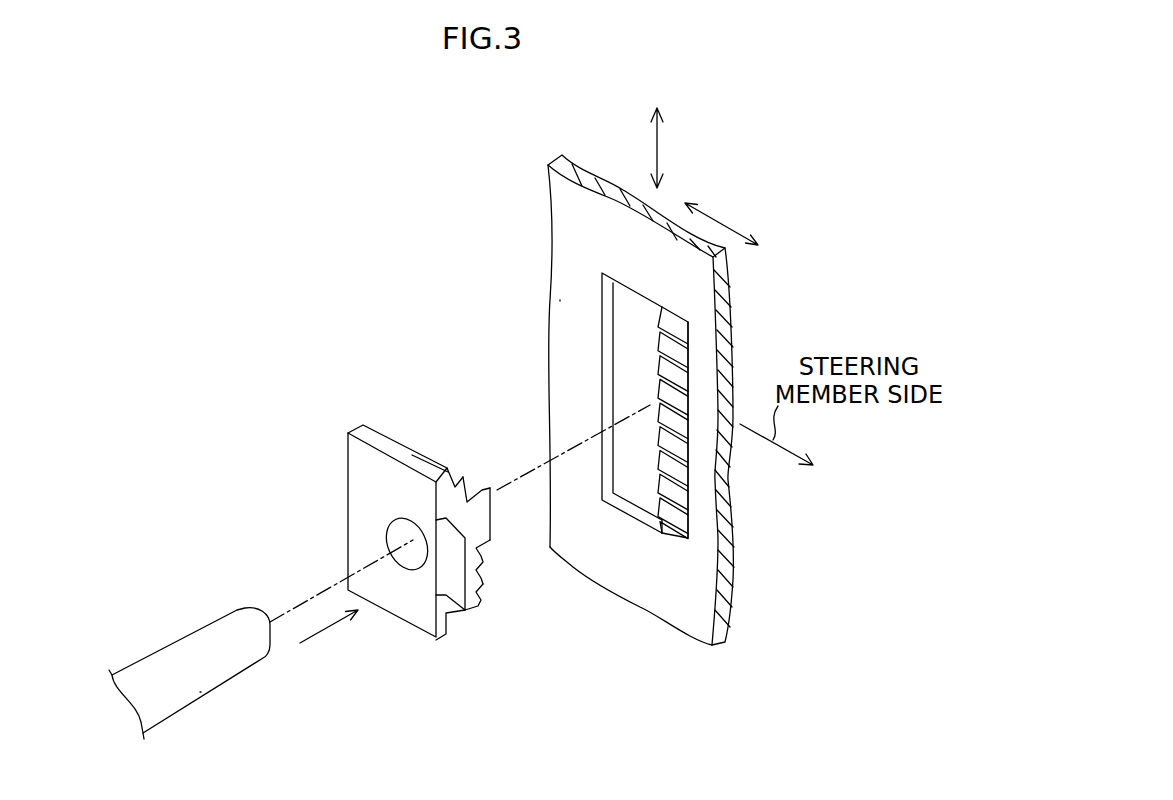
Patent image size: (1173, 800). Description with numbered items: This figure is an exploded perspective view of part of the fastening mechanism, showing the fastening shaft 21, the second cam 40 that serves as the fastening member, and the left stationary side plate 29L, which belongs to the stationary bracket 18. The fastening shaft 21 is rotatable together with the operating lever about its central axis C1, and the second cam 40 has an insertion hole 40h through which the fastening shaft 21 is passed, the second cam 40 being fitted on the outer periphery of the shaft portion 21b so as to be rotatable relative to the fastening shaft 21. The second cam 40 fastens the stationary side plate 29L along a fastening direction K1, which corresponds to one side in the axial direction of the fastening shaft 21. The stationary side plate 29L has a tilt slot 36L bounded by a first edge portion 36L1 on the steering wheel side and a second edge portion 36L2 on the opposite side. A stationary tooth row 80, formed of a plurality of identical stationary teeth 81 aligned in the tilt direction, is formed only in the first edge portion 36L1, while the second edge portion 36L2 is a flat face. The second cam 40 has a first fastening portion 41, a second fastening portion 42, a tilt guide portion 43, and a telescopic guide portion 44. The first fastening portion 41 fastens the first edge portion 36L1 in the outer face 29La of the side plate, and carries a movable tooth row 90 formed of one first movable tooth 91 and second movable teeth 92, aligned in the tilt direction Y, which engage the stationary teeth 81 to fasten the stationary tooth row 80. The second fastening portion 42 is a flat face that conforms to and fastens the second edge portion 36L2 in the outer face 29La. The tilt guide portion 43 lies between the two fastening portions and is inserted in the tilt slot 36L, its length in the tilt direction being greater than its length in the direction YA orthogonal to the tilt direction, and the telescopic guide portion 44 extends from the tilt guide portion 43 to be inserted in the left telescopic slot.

The stationary bracket 18 is at (524, 172).
The left stationary side plate 29L is at (565, 214).
The outer face of left stationary side plate 29La is at (573, 262).
The tilt slot 36L is at (633, 368).
The first edge portion 36L1 is at (700, 410).
The second edge portion 36L2 is at (598, 346).
The stationary tooth row 80 is at (650, 431).
The stationary teeth 81 is at (677, 397).
The second cam 40 is at (361, 475).
The insertion hole 40h is at (405, 533).
The first fastening portion 41 is at (463, 526).
The second fastening portion 42 is at (377, 425).
The tilt guide portion 43 is at (455, 486).
The telescopic guide portion 44 is at (468, 500).
The movable tooth row 90 is at (540, 541).
The first movable tooth 91 is at (479, 598).
The second movable teeth 92 is at (479, 546).
The fastening shaft 21 is at (169, 646).
The shaft portion 21b is at (213, 672).
The central axis C1 is at (288, 604).
The fastening direction K1 is at (334, 630).
The tilt direction Y is at (657, 145).
The direction orthogonal to tilt direction YA is at (725, 222).